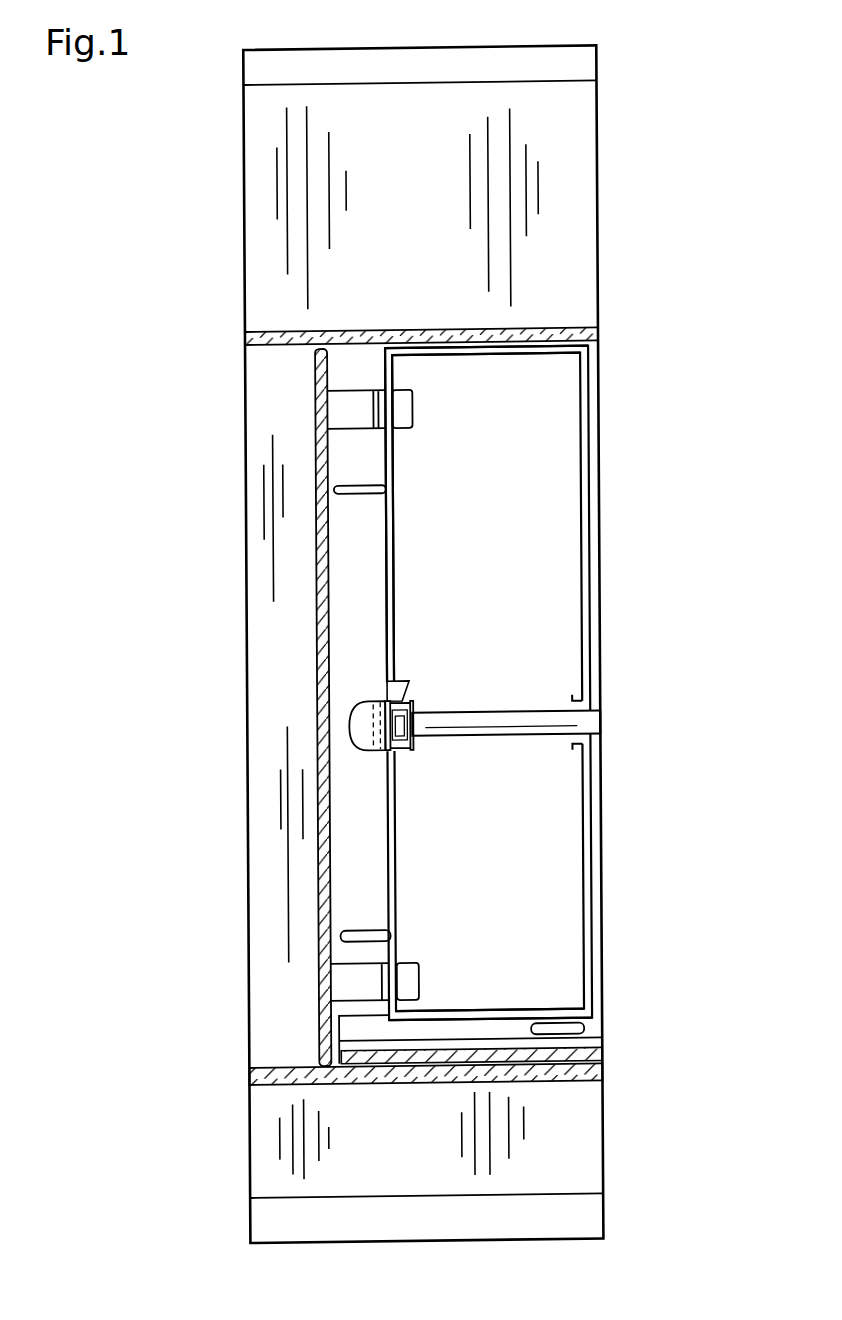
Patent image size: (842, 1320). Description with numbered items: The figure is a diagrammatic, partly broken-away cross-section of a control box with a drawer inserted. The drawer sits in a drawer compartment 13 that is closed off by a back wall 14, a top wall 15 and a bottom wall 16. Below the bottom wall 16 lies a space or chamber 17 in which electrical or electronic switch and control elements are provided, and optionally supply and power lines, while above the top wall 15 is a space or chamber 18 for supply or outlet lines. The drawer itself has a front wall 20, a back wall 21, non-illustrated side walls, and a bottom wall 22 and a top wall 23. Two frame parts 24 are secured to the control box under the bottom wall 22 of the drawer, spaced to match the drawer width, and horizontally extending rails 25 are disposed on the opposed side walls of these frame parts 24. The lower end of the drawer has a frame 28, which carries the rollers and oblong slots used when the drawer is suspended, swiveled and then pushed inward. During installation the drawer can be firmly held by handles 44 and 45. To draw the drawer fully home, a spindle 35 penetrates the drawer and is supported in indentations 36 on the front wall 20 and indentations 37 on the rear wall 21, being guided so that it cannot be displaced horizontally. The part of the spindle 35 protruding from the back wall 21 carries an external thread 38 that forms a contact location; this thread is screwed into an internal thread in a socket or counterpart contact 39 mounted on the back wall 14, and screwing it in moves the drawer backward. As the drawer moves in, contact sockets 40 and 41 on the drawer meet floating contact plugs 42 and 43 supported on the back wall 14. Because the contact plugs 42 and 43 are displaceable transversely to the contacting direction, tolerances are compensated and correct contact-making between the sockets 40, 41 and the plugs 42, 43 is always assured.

The drawer compartment 13 is at (352, 857).
The back wall 14 is at (320, 636).
The top wall 15 is at (293, 341).
The bottom wall 16 is at (545, 1077).
The space or chamber 17 is at (426, 1160).
The space or chamber 18 is at (413, 197).
The front wall 20 is at (580, 468).
The back wall 21 is at (385, 568).
The bottom wall 22 is at (540, 1017).
The top wall 23 is at (545, 353).
The frame part 24 is at (357, 1043).
The rail 25 is at (593, 1057).
The frame 28 is at (585, 1032).
The spindle 35 is at (505, 727).
The indentations 36 is at (572, 700).
The indentations 37 is at (400, 686).
The external thread 38 is at (363, 757).
The socket or counterpart contact 39 is at (342, 750).
The contact socket 40 is at (403, 972).
The contact socket 41 is at (397, 400).
The floating contact plug 42 is at (357, 993).
The floating contact plug 43 is at (345, 401).
The handle 44 is at (340, 490).
The handle 45 is at (337, 935).